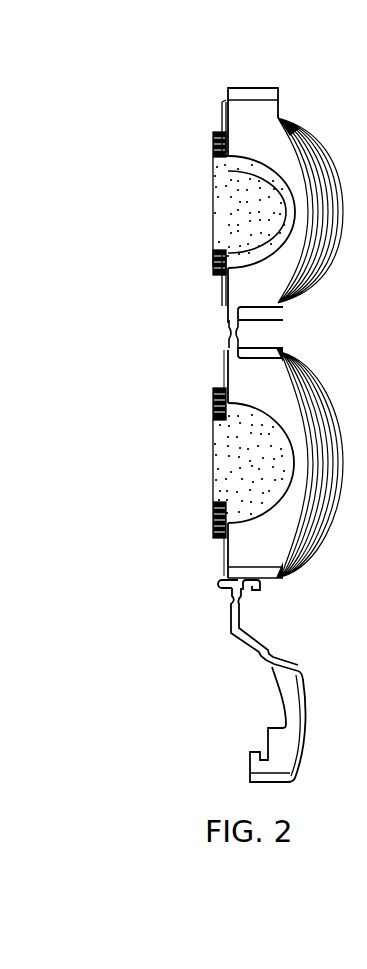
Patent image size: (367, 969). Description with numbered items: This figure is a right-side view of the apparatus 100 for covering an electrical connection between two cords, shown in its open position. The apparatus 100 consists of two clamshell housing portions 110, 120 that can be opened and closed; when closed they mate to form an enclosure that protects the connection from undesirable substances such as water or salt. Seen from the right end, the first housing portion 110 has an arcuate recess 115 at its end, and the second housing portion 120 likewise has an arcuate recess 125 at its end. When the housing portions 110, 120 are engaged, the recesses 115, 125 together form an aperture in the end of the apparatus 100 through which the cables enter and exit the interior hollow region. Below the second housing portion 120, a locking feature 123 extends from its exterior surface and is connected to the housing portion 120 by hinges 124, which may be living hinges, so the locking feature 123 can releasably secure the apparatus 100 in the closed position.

The apparatus 100 is at (123, 308).
The housing portion 110 is at (192, 132).
The recess 115 is at (224, 212).
The housing portion 120 is at (178, 432).
The recess 125 is at (219, 493).
The hinge 124 is at (210, 640).
The locking feature 123 is at (231, 724).